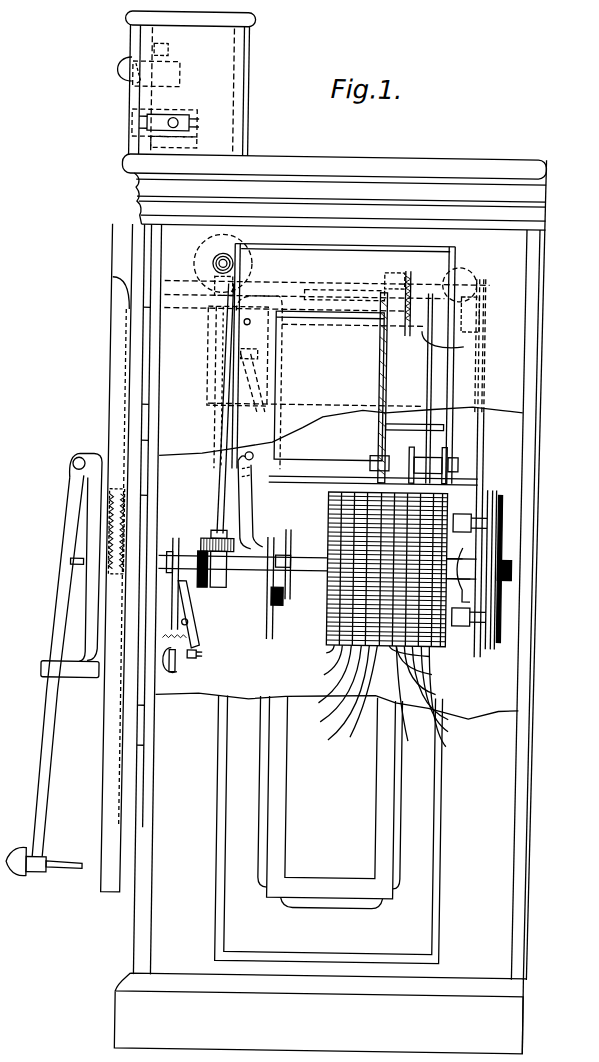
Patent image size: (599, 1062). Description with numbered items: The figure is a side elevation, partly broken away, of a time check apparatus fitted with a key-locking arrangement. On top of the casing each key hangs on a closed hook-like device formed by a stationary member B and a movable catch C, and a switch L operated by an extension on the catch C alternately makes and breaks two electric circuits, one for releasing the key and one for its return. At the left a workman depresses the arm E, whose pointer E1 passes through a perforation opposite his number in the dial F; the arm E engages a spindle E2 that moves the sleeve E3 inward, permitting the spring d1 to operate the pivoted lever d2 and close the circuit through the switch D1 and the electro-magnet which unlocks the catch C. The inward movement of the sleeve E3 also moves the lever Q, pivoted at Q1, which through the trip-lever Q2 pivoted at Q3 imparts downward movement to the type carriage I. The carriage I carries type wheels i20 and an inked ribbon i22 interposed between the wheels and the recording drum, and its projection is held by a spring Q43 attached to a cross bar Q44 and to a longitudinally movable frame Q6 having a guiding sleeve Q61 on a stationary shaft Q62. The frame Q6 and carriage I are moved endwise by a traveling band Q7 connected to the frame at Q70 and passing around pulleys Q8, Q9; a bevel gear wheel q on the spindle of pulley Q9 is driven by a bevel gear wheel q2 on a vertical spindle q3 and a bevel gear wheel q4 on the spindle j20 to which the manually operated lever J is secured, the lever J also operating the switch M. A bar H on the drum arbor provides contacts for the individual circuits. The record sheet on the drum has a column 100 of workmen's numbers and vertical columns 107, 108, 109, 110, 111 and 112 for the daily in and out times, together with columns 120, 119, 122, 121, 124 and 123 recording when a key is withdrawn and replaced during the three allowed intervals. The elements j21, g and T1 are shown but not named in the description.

The stationary member B is at (114, 70).
The movable catch C is at (128, 86).
The switch L is at (169, 112).
The pulley Q9 is at (206, 252).
The bevel gear wheel q is at (210, 265).
The pivot Q1 is at (208, 284).
The pivot Q3 is at (240, 324).
The trip-lever Q2 is at (245, 347).
The vertical spindle q3 is at (217, 427).
The frame j21 is at (300, 404).
The stationary shaft Q62 is at (274, 283).
The guiding sleeve Q61 is at (311, 283).
The longitudinally movable frame Q6 is at (347, 283).
The traveling band Q7 is at (392, 256).
The spring Q43 is at (407, 283).
The pulley Q8 is at (458, 276).
The connection of band to frame Q70 is at (407, 297).
The cross bar Q44 is at (460, 345).
The type carriage I is at (376, 437).
The inked ribbon i22 is at (420, 452).
The type wheels i20 is at (437, 481).
The bracket g is at (496, 590).
The bar H is at (327, 508).
The lever Q is at (242, 502).
The tube T1 is at (178, 462).
The bevel gear wheel q2 is at (203, 540).
The bevel gear wheel q4 is at (201, 590).
The sleeve E3 is at (222, 575).
The spindle j20 is at (240, 563).
The switch M is at (283, 584).
The switch D1 is at (193, 614).
The spring d1 is at (163, 663).
The pivoted lever d2 is at (190, 661).
The manually operated lever J is at (117, 518).
The arm E is at (48, 710).
The spindle E2 is at (78, 566).
The pointer E1 is at (67, 873).
The dial F is at (102, 832).
The vertical column 124 is at (314, 655).
The vertical column 123 is at (319, 665).
The vertical column 122 is at (322, 680).
The vertical column 121 is at (327, 689).
The vertical column 120 is at (332, 699).
The vertical column 119 is at (357, 701).
The vertical column 112 is at (412, 701).
The column 100 is at (421, 658).
The vertical column 107 is at (424, 668).
The vertical column 108 is at (428, 678).
The vertical column 109 is at (441, 688).
The vertical column 110 is at (446, 694).
The vertical column 111 is at (450, 702).